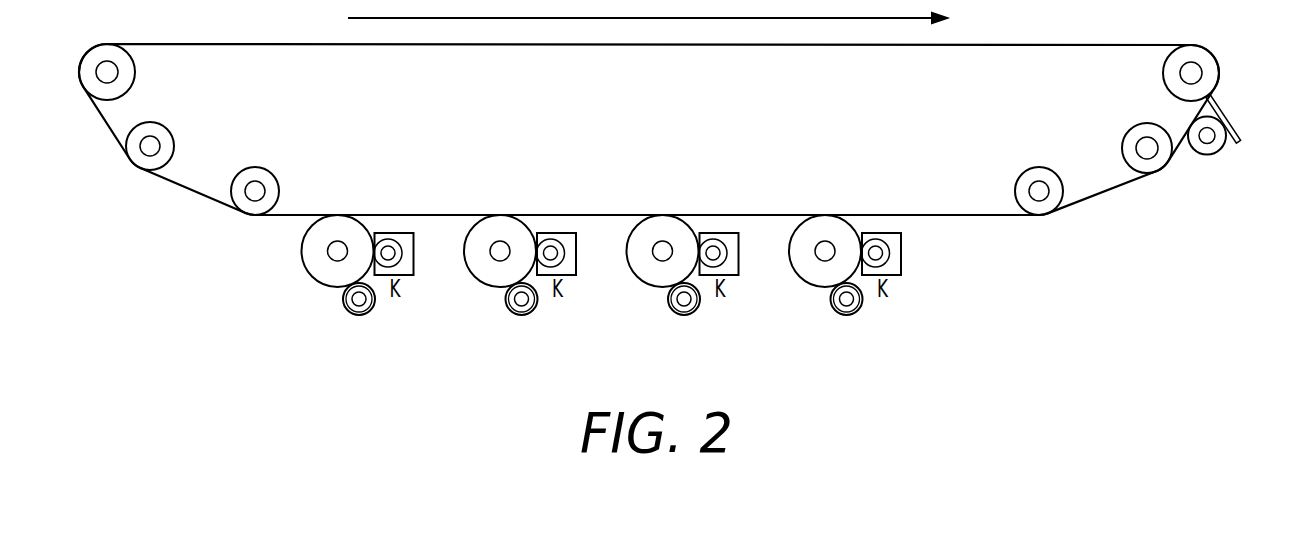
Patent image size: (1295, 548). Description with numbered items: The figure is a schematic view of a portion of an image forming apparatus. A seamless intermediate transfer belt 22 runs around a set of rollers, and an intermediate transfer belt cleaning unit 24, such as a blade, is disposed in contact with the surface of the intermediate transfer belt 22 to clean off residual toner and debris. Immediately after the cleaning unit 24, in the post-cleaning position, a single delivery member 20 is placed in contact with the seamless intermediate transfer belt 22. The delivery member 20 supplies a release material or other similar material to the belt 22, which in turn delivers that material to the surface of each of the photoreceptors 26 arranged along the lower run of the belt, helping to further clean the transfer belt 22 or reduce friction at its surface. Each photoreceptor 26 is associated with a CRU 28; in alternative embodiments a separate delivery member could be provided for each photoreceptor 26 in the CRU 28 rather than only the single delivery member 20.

The delivery member 20 is at (1203, 155).
The seamless intermediate transfer belt 22 is at (602, 54).
The intermediate transfer belt cleaning unit 24 is at (1227, 116).
The photoreceptor 26 is at (580, 282).
The CRU 28 is at (622, 336).